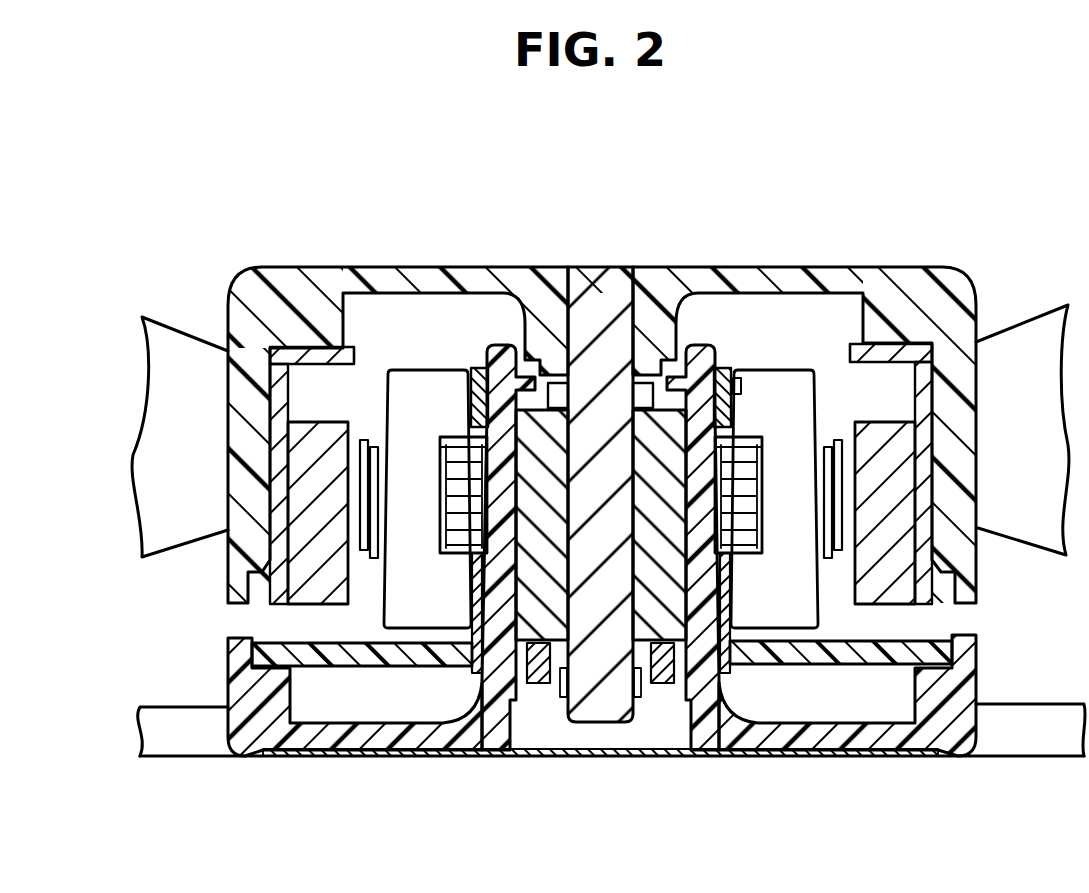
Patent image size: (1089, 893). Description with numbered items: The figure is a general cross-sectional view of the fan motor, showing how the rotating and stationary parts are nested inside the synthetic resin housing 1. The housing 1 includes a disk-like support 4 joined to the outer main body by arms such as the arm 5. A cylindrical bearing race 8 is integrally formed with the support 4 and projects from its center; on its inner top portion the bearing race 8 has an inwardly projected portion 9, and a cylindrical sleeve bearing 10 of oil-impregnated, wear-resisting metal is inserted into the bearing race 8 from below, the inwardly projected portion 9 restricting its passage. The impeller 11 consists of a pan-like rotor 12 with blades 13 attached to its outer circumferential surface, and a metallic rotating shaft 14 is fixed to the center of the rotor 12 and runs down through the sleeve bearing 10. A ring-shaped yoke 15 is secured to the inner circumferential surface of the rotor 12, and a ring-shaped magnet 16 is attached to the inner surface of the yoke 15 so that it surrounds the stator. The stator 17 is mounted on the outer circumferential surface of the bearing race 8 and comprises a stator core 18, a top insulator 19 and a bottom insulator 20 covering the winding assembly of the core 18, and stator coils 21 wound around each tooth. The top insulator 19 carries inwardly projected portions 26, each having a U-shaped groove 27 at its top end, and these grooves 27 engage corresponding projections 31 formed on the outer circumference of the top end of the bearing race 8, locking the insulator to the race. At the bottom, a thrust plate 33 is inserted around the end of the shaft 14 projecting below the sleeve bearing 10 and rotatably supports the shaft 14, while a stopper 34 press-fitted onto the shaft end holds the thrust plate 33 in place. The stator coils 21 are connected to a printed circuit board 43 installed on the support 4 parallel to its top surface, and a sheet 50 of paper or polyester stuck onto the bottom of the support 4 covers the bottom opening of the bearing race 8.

The housing 1 is at (958, 753).
The support 4 is at (892, 740).
The arm 5 is at (190, 760).
The bearing race 8 is at (740, 560).
The inwardly projected portion 9 is at (549, 392).
The sleeve bearing 10 is at (648, 430).
The impeller 11 is at (961, 272).
The rotor 12 is at (277, 288).
The blades 13 is at (183, 332).
The rotating shaft 14 is at (602, 265).
The yoke 15 is at (890, 604).
The magnet 16 is at (893, 605).
The stator 17 is at (827, 407).
The stator core 18 is at (820, 752).
The top insulator 19 is at (453, 428).
The bottom insulator 20 is at (453, 560).
The stator coils 21 is at (407, 367).
The inwardly projected portions 26 is at (705, 347).
The U-shaped groove 27 is at (526, 398).
The projections 31 is at (715, 372).
The thrust plate 33 is at (535, 700).
The stopper 34 is at (643, 702).
The printed circuit board 43 is at (330, 667).
The sheet 50 is at (480, 690).